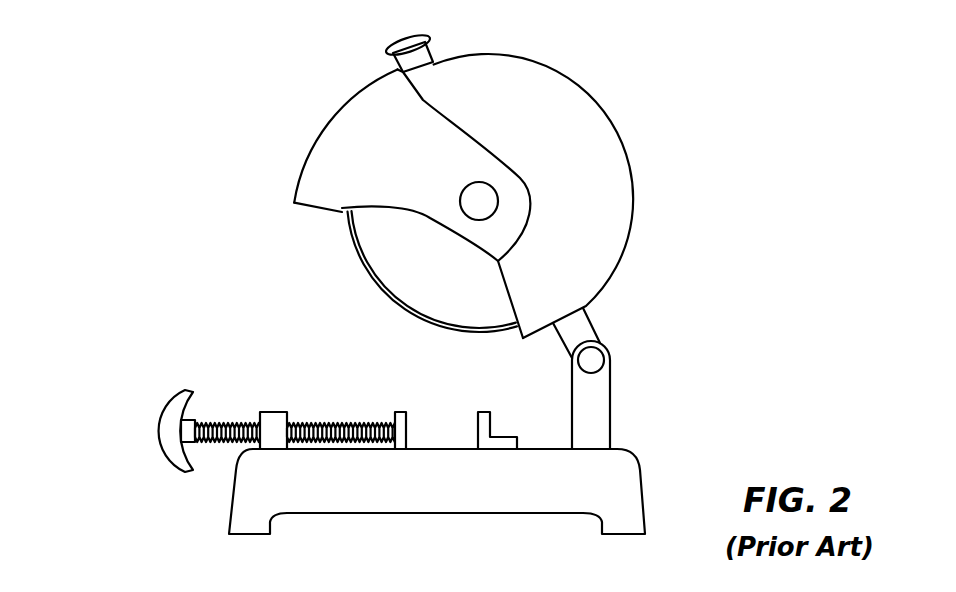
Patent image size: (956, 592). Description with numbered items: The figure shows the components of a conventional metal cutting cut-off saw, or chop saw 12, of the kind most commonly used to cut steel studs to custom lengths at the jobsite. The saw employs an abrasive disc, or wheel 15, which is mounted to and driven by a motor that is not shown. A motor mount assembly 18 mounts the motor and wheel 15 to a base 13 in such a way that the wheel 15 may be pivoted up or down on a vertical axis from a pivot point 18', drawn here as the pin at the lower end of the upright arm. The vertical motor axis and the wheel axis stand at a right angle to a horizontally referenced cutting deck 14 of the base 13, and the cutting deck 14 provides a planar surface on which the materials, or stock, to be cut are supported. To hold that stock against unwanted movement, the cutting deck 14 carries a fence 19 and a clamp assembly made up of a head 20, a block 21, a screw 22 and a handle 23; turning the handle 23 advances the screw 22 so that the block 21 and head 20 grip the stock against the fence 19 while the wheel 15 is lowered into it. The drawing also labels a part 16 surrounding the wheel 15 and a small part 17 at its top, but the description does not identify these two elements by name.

The chop saw 12 is at (643, 163).
The base 13 is at (377, 497).
The cutting deck 14 is at (448, 449).
The wheel 15 is at (358, 232).
The blade housing 16 is at (383, 130).
The handle knob 17 is at (388, 50).
The motor mount assembly 18 is at (651, 378).
The pivot point 18' is at (663, 345).
The fence 19 is at (490, 448).
The head 20 is at (393, 412).
The block 21 is at (273, 412).
The screw 22 is at (222, 442).
The handle 23 is at (165, 416).